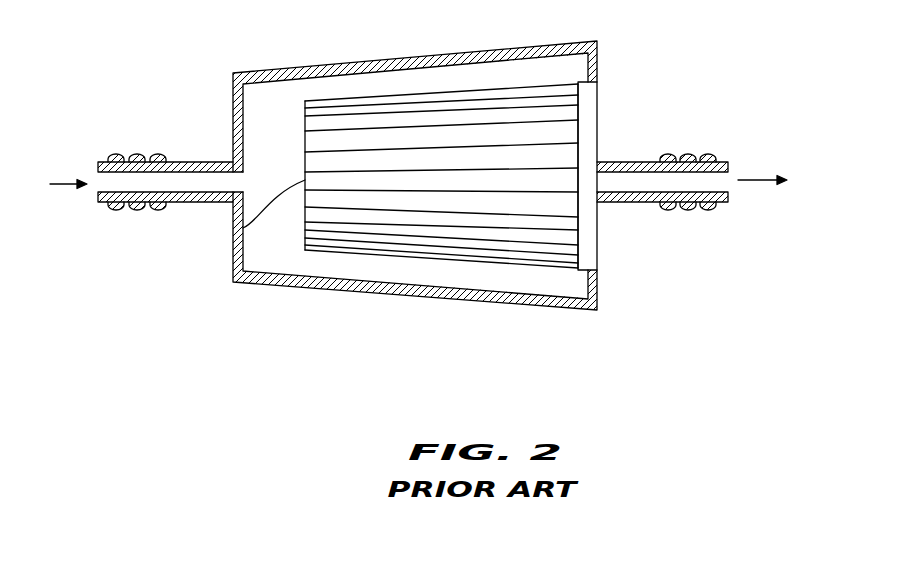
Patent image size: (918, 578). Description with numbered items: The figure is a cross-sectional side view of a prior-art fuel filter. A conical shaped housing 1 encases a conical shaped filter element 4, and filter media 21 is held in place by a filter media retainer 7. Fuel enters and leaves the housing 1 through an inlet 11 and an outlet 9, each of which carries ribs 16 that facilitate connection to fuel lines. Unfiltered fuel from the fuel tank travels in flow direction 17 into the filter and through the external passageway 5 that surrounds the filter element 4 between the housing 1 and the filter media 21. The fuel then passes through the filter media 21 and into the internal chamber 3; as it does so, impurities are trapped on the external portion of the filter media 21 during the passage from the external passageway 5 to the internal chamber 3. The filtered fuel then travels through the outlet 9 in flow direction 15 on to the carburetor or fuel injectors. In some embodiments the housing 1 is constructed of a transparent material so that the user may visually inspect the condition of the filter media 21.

The housing 1 is at (300, 68).
The internal chamber 3 is at (377, 192).
The filter element 4 is at (240, 228).
The external passageway 5 is at (397, 73).
The filter media retainer 7 is at (593, 97).
The outlet 9 is at (633, 183).
The inlet 11 is at (190, 164).
The flow direction 15 is at (139, 155).
The ribs 16 is at (117, 210).
The flow direction 17 is at (62, 185).
The filter media 21 is at (460, 90).